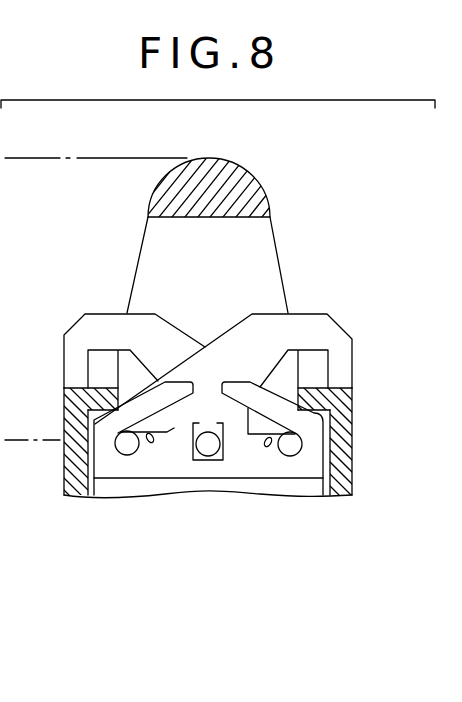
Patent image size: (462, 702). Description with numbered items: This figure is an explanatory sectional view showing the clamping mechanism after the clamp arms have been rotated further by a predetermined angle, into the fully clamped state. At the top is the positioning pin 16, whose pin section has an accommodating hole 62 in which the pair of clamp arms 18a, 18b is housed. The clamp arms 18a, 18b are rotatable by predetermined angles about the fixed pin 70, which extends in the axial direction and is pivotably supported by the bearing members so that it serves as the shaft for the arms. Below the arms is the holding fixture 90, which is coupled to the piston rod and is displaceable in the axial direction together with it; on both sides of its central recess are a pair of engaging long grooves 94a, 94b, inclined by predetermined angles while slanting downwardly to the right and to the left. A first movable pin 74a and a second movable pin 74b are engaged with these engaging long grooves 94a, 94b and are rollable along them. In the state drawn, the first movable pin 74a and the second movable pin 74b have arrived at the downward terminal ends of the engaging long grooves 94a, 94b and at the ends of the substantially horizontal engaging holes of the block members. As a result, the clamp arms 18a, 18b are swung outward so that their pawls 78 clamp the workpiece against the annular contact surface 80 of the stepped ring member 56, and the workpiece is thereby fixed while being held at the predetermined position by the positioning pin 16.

The positioning pin 16 is at (268, 209).
The accommodating hole 62 is at (262, 264).
The clamp arm 18a is at (118, 333).
The clamp arm 18b is at (312, 335).
The pawl 78 is at (66, 382).
The annular contact surface 80 is at (349, 388).
The stepped ring member 56 is at (350, 459).
The holding fixture 90 is at (235, 467).
The fixed pin 70 is at (210, 455).
The first movable pin 74a is at (128, 455).
The second movable pin 74b is at (293, 455).
The engaging long groove 94a is at (155, 445).
The engaging long groove 94b is at (275, 447).